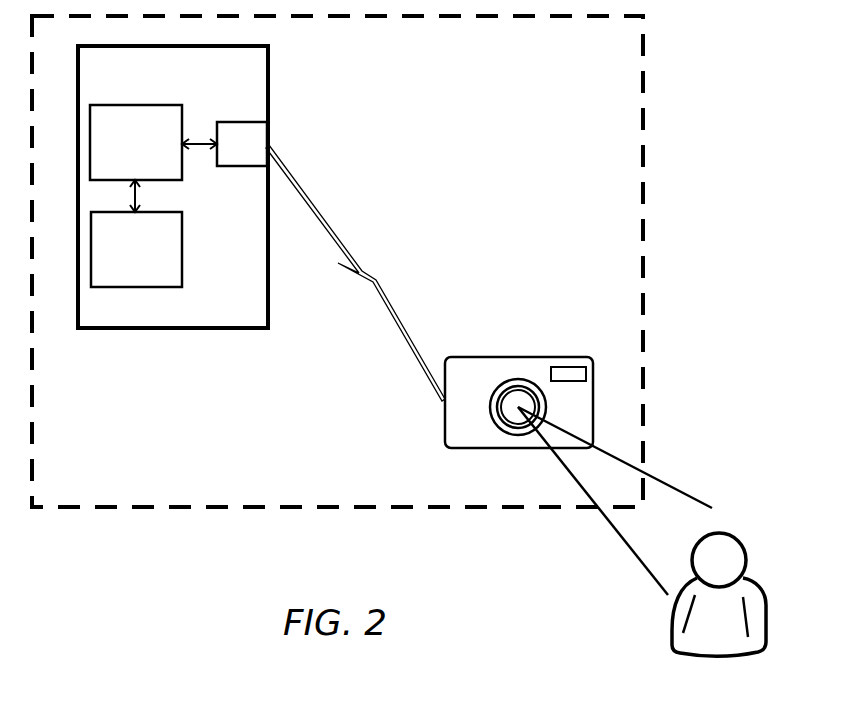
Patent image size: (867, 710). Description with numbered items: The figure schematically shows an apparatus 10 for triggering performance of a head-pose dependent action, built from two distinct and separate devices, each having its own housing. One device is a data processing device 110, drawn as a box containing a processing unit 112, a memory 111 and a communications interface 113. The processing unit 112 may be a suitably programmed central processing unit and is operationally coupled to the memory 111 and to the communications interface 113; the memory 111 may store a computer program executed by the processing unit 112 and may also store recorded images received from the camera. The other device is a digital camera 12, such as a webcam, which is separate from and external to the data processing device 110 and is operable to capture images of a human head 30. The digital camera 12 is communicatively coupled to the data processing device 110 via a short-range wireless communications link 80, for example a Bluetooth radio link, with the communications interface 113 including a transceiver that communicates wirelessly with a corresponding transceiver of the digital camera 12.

The apparatus 10 is at (337, 297).
The data processing device 110 is at (173, 224).
The memory 111 is at (118, 262).
The processing unit 112 is at (115, 154).
The communications interface 113 is at (223, 154).
The short-range wireless communications link 80 is at (355, 273).
The digital camera 12 is at (519, 359).
The human head 30 is at (758, 585).